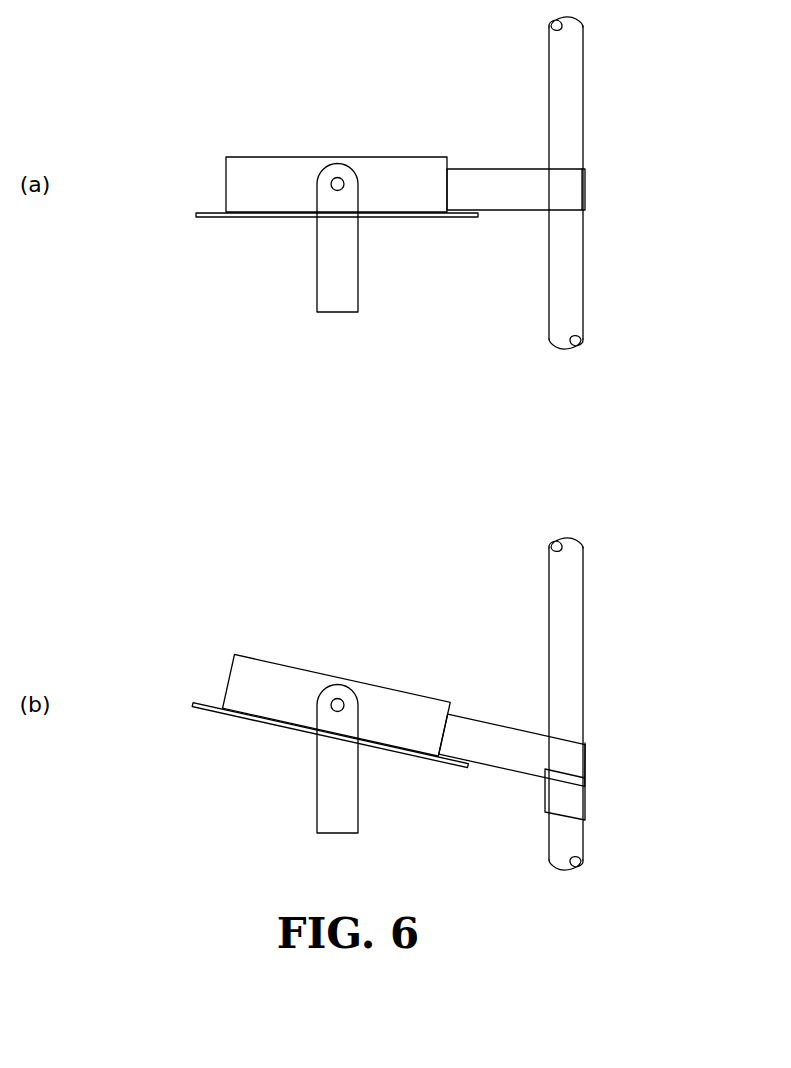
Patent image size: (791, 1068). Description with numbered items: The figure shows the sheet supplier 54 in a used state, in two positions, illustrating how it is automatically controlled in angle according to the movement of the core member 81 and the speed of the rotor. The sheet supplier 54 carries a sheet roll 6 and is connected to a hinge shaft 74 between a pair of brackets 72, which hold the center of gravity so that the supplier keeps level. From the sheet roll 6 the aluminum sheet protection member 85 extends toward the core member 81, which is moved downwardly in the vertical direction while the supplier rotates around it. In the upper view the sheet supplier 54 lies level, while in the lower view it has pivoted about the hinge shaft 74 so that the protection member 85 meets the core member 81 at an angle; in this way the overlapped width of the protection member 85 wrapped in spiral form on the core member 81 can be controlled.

The sheet roll 6 is at (258, 172).
The sheet supplier 54 is at (203, 212).
The brackets 72 is at (332, 275).
The hinge shaft 74 is at (340, 180).
The core member 81 is at (568, 94).
The protection member 85 is at (505, 182).